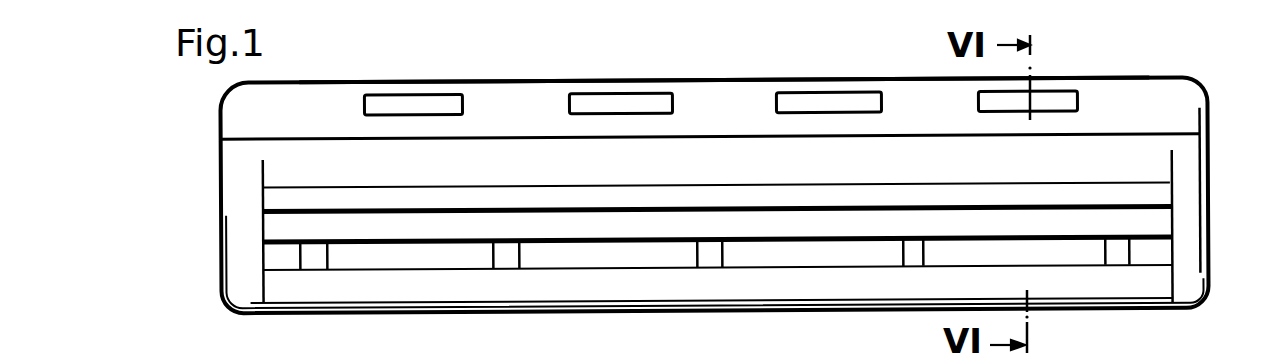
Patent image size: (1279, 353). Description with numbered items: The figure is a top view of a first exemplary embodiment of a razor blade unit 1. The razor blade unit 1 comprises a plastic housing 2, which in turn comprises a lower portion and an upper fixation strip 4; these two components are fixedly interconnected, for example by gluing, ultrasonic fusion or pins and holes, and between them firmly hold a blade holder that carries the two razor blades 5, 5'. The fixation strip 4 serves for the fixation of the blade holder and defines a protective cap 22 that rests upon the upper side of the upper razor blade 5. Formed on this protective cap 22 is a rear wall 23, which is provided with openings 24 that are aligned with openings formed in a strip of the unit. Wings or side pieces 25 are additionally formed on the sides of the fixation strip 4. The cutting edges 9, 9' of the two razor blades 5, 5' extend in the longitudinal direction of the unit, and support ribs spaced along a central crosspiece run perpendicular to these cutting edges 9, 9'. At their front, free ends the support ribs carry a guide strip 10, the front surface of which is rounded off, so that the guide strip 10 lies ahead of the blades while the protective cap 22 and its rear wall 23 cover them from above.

The razor blade unit 1 is at (198, 179).
The plastic housing 2 is at (1210, 177).
The fixation strip 4 is at (1174, 148).
The razor blade 5 is at (763, 197).
The razor blade 5' is at (757, 230).
The cutting edge 9 is at (1141, 296).
The cutting edge 9' is at (1085, 296).
The guide strip 10 is at (398, 297).
The protective cap 22 is at (1120, 148).
The rear wall 23 is at (517, 98).
The openings 24 is at (655, 100).
The side pieces 25 is at (235, 250).